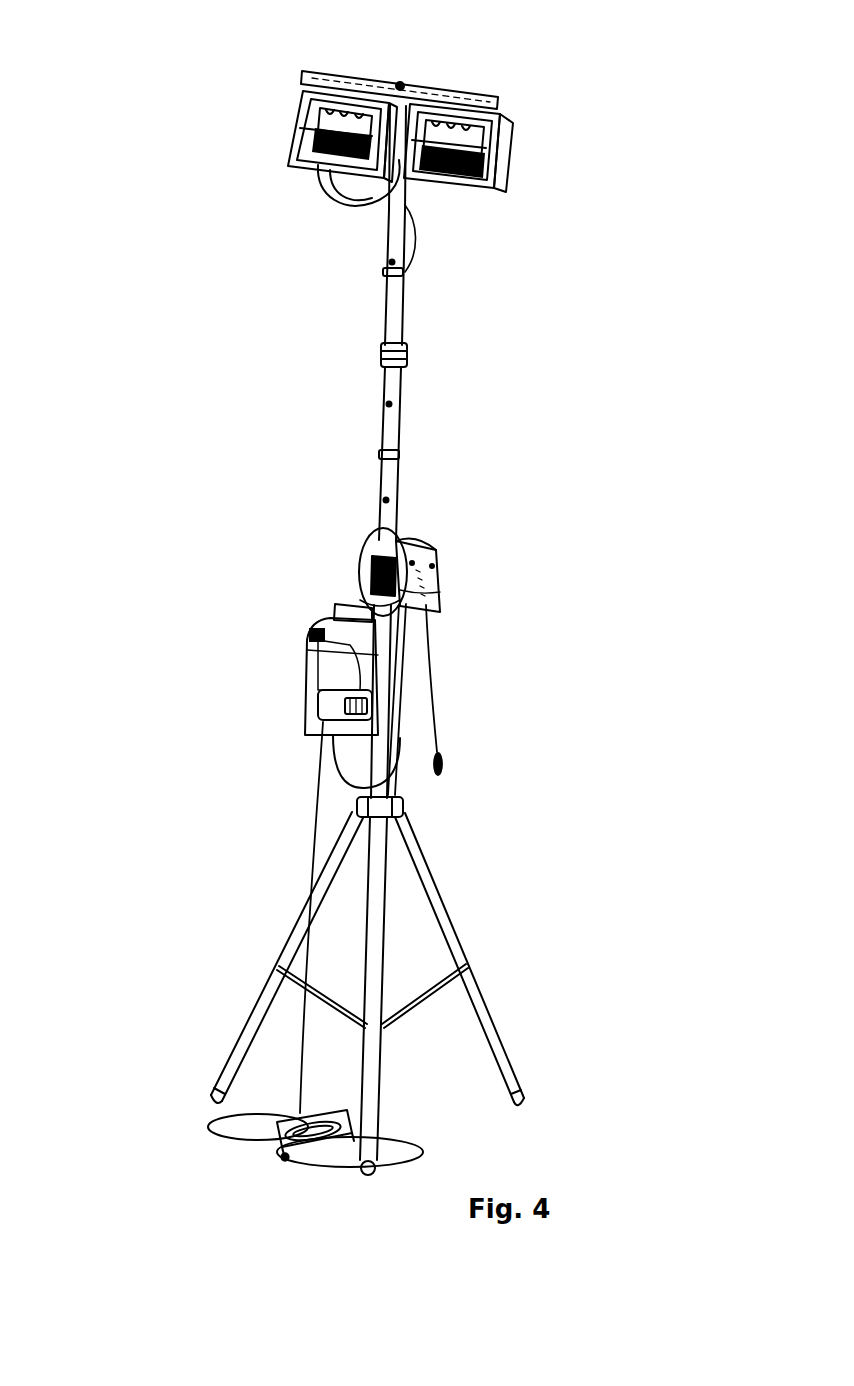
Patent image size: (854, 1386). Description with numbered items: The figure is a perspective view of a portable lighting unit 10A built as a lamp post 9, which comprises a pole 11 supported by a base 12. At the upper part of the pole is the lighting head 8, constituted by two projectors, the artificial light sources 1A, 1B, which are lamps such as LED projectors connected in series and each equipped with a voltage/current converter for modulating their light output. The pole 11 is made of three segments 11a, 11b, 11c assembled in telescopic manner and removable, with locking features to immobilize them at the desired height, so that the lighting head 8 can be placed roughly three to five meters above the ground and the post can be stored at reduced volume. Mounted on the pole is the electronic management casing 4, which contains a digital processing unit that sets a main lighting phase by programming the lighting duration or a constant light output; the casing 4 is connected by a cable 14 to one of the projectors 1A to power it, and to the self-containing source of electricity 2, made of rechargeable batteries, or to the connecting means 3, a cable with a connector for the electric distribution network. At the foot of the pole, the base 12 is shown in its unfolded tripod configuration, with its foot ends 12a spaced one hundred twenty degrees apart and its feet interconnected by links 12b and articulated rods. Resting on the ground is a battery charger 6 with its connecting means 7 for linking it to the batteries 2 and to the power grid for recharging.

The lamp post 9 is at (170, 205).
The lighting unit 10A is at (540, 98).
The lighting head 8 is at (560, 112).
The artificial light source 1A is at (302, 86).
The artificial light source 1B is at (473, 110).
The pole 11 is at (465, 351).
The pole segment 11a is at (403, 272).
The pole segment 11b is at (392, 405).
The pole segment 11c is at (392, 613).
The electronic management casing 4 is at (440, 563).
The cable 14 is at (365, 553).
The connecting means 3 is at (432, 660).
The self-containing source of electricity 2 is at (320, 660).
The base 12 is at (515, 936).
The foot ends 12a is at (523, 1103).
The links 12b is at (295, 980).
The battery charger 6 is at (287, 1120).
The connecting means 7 is at (293, 1157).